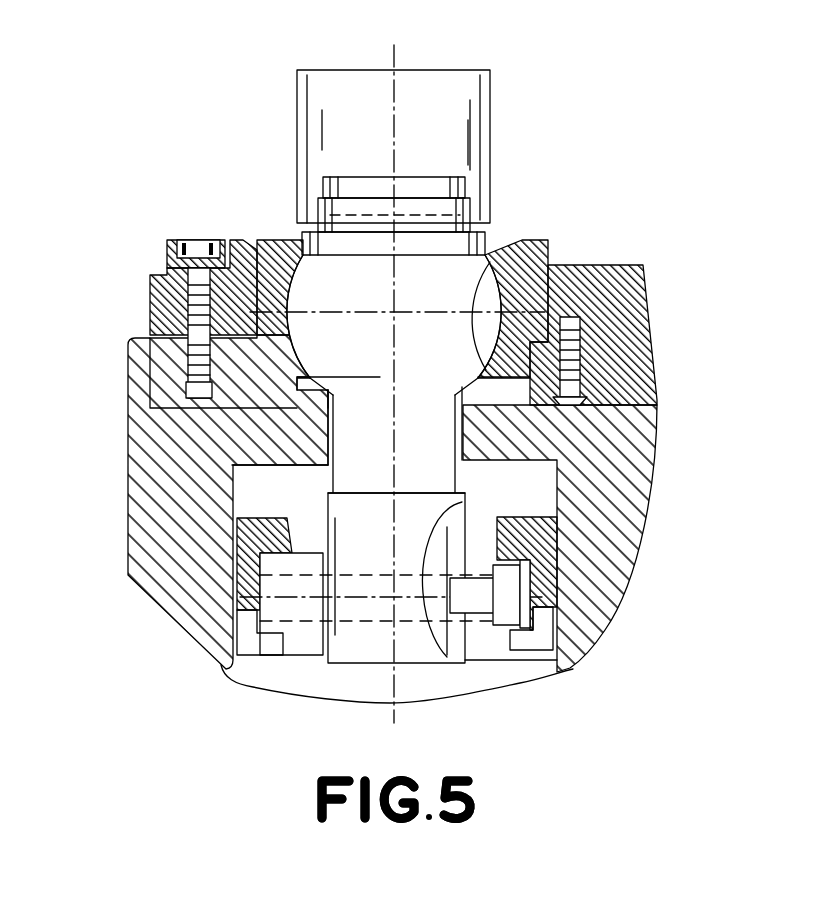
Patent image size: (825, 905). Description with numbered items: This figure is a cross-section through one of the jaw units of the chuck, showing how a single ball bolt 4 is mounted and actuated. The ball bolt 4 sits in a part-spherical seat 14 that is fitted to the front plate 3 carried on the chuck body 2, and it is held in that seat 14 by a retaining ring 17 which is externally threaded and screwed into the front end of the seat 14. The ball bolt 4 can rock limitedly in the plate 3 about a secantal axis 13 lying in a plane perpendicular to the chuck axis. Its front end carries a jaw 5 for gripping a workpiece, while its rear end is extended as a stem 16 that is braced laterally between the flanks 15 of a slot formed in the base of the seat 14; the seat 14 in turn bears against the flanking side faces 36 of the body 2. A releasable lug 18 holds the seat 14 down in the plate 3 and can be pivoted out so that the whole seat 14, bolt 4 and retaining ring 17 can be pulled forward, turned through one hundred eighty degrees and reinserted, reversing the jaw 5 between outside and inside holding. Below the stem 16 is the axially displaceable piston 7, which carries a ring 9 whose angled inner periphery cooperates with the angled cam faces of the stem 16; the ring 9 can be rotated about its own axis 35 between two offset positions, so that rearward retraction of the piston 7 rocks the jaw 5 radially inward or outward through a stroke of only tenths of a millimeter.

The chuck body 2 is at (632, 430).
The front plate 3 is at (152, 290).
The ball bolt 4 is at (548, 244).
The jaw 5 is at (482, 118).
The piston 7 is at (530, 590).
The ring 9 is at (276, 466).
The secantal axis 13 is at (418, 305).
The part-spherical seat 14 is at (327, 430).
The flank 15 is at (320, 440).
The stem 16 is at (465, 467).
The retaining ring 17 is at (270, 240).
The releasable lug 18 is at (178, 240).
The ring axis 35 is at (395, 62).
The side face 36 is at (283, 468).